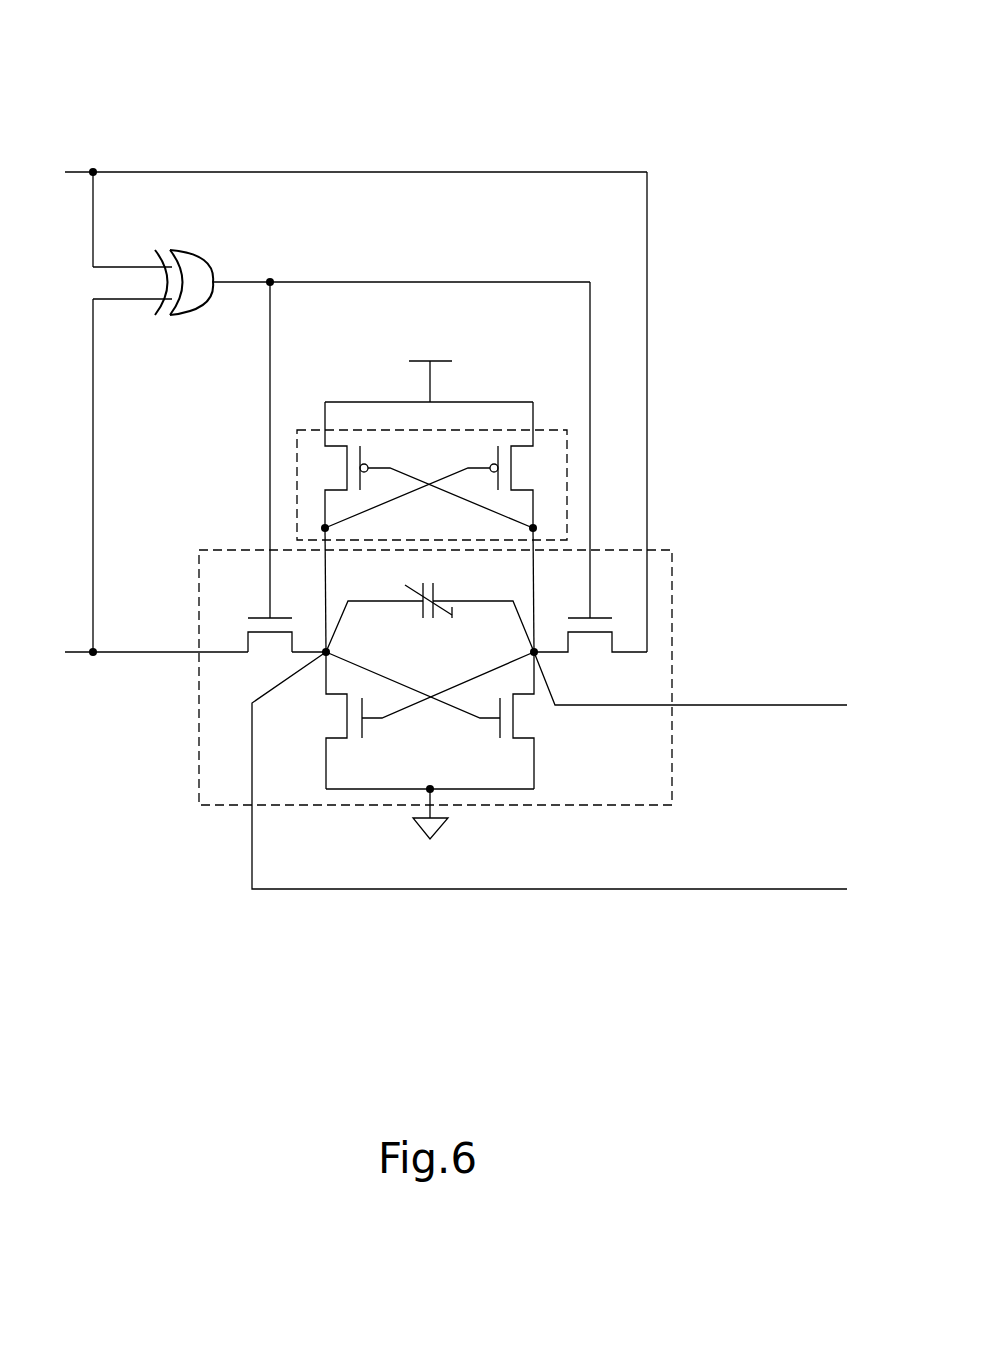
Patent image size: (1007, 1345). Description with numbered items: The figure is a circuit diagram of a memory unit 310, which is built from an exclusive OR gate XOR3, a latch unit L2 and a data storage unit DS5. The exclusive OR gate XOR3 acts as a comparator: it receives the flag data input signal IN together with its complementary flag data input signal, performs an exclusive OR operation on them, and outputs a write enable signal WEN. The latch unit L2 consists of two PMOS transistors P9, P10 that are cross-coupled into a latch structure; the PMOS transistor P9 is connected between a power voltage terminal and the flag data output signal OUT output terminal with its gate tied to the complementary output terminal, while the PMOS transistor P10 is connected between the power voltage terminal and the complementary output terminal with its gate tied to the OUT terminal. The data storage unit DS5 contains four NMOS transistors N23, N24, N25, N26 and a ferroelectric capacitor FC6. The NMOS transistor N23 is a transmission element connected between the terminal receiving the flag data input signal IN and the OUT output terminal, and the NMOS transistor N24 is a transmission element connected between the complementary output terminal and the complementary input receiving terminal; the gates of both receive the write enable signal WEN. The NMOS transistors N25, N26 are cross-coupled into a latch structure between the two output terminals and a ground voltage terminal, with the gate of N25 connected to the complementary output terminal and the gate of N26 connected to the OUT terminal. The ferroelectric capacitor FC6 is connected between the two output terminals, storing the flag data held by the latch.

The memory unit 310 is at (643, 80).
The exclusive OR gate XOR3 is at (184, 265).
The latch unit L2 is at (558, 430).
The PMOS transistor P9 is at (420, 467).
The PMOS transistor P10 is at (445, 467).
The data storage unit DS5 is at (672, 550).
The NMOS transistor N23 is at (274, 467).
The NMOS transistor N24 is at (590, 467).
The NMOS transistor N25 is at (413, 720).
The NMOS transistor N26 is at (430, 720).
The ferroelectric capacitor FC6 is at (430, 602).
The flag data input signal IN is at (156, 496).
The write enable signal WEN is at (401, 264).
The flag data output signal OUT is at (549, 770).